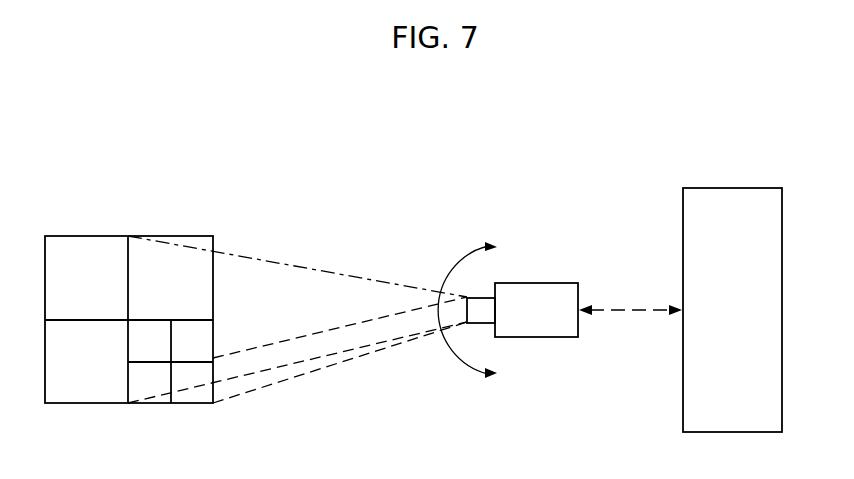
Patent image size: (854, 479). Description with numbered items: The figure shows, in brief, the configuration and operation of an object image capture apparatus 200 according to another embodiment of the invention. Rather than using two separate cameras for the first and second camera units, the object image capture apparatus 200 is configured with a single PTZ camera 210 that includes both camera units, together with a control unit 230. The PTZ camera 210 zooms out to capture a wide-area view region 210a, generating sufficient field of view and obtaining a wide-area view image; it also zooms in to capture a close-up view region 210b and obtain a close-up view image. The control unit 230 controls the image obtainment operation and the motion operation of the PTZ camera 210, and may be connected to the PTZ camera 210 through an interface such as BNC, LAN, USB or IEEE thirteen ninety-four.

The object image capture apparatus 200 is at (385, 176).
The PTZ camera 210 is at (540, 283).
The wide-area view region 210a is at (298, 260).
The close-up view region 210b is at (314, 380).
The control unit 230 is at (733, 188).